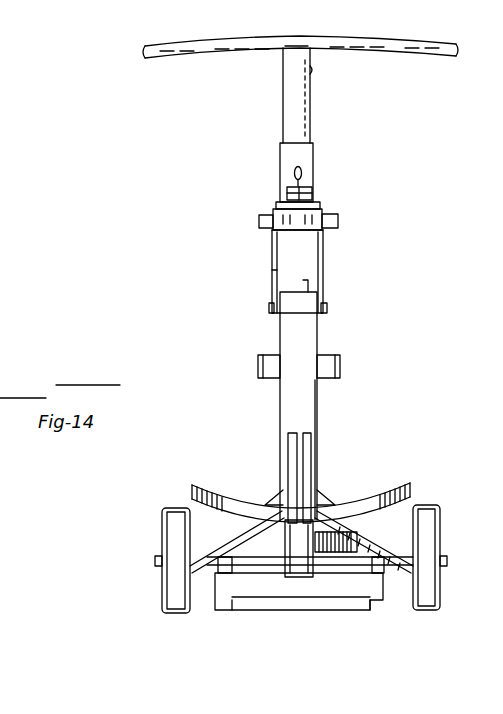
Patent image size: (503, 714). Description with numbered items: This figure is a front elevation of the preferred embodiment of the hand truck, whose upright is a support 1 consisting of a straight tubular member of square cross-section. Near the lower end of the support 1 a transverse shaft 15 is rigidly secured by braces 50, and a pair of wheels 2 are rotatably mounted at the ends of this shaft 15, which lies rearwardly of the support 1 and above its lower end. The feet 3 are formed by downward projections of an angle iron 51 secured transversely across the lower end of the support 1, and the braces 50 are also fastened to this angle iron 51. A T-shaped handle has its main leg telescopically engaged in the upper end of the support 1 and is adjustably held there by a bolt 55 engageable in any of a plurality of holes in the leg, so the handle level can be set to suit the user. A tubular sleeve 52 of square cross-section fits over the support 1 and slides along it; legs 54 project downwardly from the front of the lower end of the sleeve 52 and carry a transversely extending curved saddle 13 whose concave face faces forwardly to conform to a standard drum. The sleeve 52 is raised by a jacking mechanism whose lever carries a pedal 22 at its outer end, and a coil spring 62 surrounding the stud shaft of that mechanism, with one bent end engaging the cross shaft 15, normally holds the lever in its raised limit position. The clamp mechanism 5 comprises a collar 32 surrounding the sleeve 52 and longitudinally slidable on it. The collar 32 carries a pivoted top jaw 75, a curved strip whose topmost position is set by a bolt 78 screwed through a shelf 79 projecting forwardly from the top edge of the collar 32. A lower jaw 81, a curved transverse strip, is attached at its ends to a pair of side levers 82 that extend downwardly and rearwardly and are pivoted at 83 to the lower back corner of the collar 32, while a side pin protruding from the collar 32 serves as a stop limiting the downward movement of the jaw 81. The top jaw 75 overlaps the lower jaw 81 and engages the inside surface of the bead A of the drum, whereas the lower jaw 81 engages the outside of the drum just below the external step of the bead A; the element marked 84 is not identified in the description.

The bead A is at (443, 58).
The support 1 is at (300, 98).
The bolt 55 is at (313, 67).
The bolt 78 is at (302, 174).
The shelf 79 is at (313, 192).
The top jaw 75 is at (310, 212).
The lower jaw 81 is at (340, 221).
The clamp mechanism 5 is at (330, 232).
The side levers 82 is at (272, 240).
The sleeve wall 84 is at (274, 272).
The collar 32 is at (308, 283).
The pivot 83 is at (328, 308).
The pedal 22 is at (340, 368).
The tubular sleeve 52 is at (310, 400).
The legs 54 is at (290, 455).
The curved saddle 13 is at (404, 490).
The feet 3 is at (235, 603).
The angle iron 51 is at (320, 585).
The transverse shaft 15 is at (157, 564).
The braces 50 is at (225, 530).
The coil spring 62 is at (343, 543).
The wheels 2 is at (178, 545).